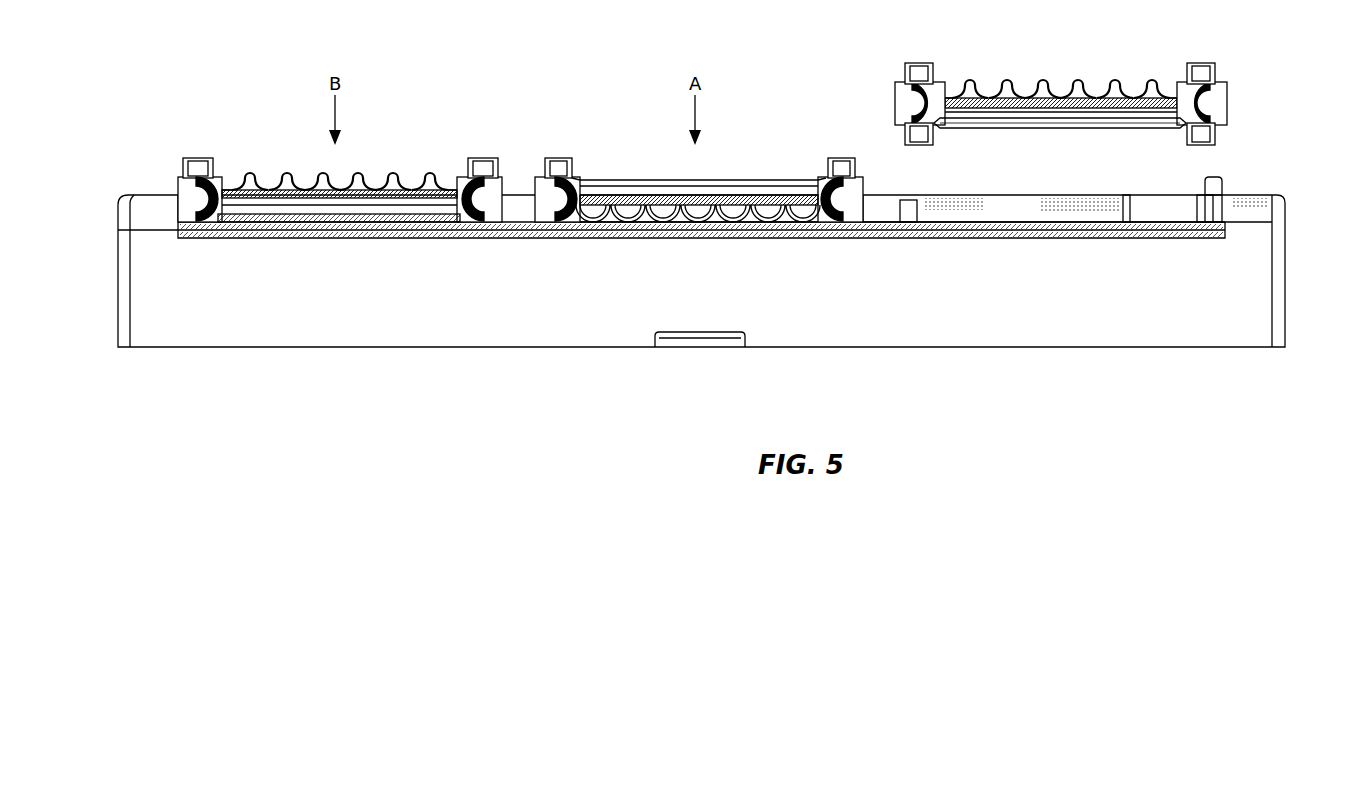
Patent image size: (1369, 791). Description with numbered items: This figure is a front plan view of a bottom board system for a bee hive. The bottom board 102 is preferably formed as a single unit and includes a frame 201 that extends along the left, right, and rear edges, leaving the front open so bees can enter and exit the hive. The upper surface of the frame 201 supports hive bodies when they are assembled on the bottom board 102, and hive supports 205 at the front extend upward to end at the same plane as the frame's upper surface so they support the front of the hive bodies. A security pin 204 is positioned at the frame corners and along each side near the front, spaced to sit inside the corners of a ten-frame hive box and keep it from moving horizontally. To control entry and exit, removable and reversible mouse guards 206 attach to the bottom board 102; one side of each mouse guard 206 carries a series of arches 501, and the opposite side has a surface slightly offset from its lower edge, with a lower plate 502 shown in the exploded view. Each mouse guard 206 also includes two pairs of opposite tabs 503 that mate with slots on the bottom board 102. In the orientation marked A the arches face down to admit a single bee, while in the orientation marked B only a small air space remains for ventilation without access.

The bottom board 102 is at (1220, 290).
The frame 201 is at (1257, 212).
The security pin 204 is at (1215, 178).
The hive support 205 is at (880, 197).
The mouse guard/entrance reducer 206 is at (392, 177).
The series of arches 501 is at (1100, 82).
The lower plate 502 is at (1058, 128).
The opposite tabs 503 is at (907, 65).